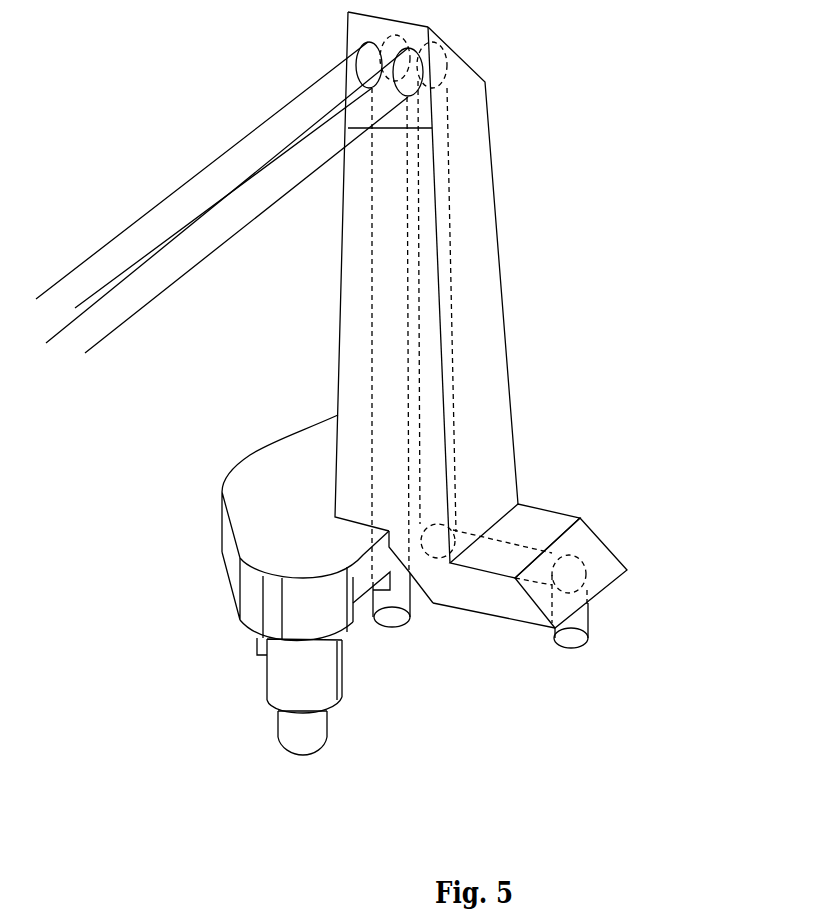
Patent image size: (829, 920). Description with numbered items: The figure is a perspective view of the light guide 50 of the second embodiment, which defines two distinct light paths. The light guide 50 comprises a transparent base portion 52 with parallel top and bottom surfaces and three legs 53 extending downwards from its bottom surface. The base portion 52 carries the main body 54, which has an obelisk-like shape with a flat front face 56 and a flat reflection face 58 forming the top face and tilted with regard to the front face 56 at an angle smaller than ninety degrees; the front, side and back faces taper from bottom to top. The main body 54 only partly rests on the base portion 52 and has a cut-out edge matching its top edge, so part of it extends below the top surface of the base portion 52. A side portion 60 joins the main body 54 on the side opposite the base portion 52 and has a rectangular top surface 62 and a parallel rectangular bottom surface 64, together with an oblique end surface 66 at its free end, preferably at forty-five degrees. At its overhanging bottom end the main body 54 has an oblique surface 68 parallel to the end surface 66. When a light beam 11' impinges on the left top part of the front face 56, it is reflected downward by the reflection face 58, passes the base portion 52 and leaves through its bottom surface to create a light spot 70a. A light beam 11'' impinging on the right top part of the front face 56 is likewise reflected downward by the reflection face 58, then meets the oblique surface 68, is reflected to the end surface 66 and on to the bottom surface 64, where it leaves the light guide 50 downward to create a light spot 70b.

The light beam 11' is at (204, 175).
The light beam 11'' is at (227, 200).
The light guide 50 is at (471, 297).
The base portion 52 is at (247, 594).
The legs 53 is at (256, 646).
The main body 54 is at (484, 347).
The front face 56 is at (355, 377).
The reflection face 58 is at (446, 43).
The side portion 60 is at (557, 570).
The top surface 62 is at (513, 524).
The bottom surface 64 is at (533, 624).
The end surface 66 is at (598, 562).
The oblique surface 68 is at (406, 571).
The light spot 70a is at (394, 614).
The light spot 70b is at (573, 640).